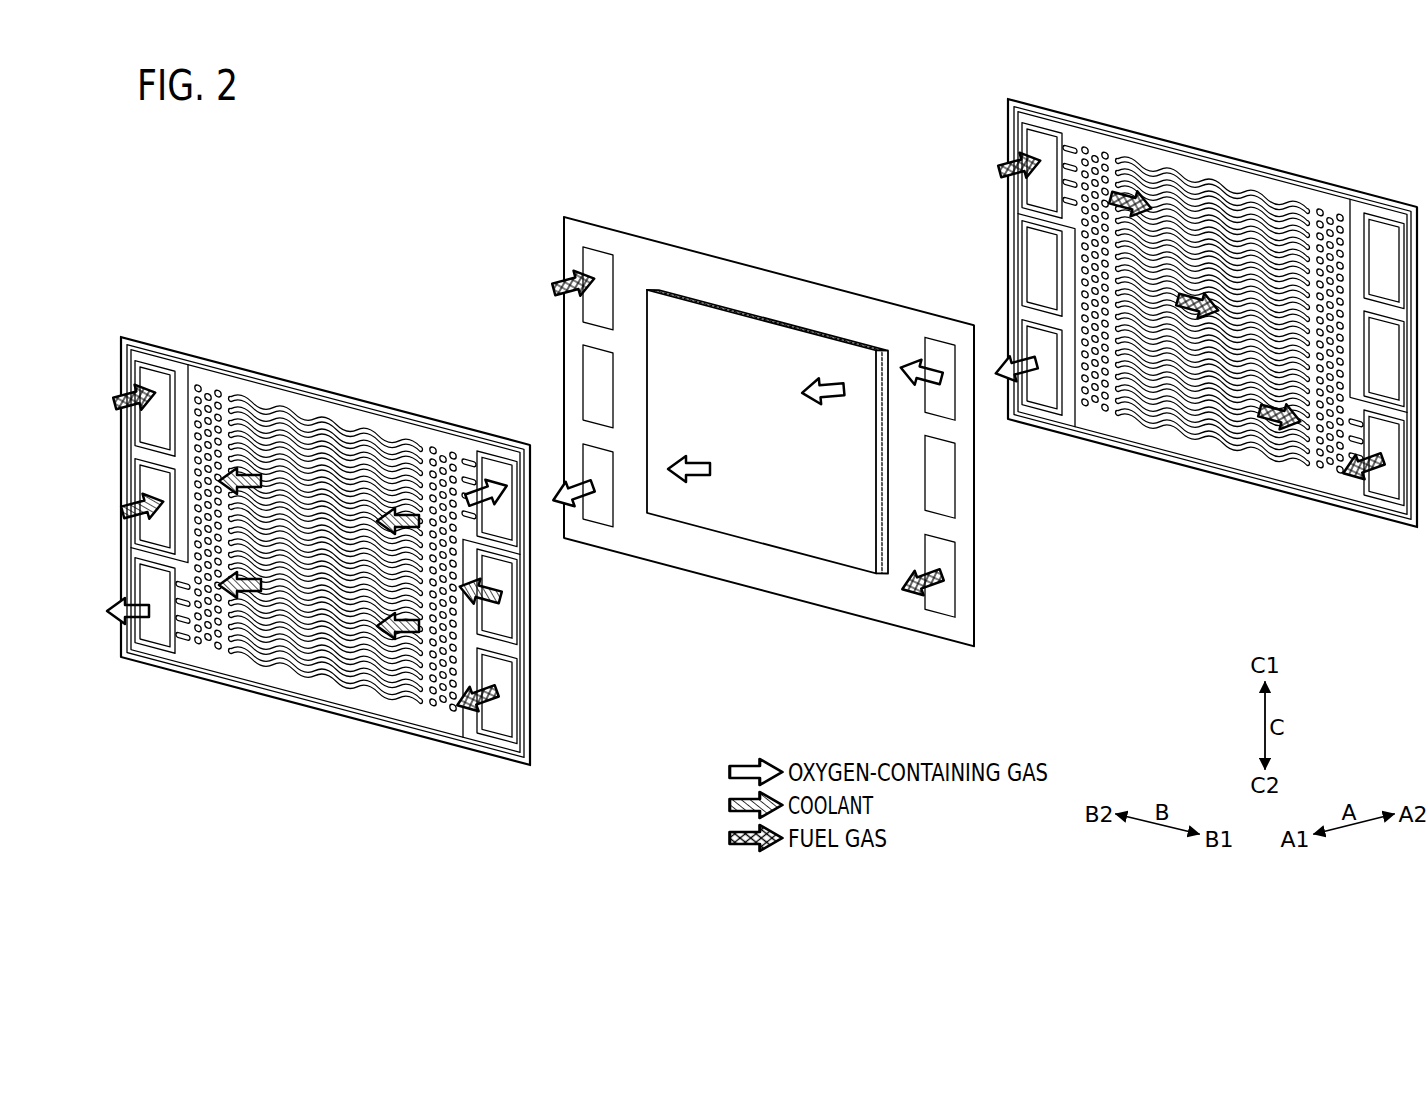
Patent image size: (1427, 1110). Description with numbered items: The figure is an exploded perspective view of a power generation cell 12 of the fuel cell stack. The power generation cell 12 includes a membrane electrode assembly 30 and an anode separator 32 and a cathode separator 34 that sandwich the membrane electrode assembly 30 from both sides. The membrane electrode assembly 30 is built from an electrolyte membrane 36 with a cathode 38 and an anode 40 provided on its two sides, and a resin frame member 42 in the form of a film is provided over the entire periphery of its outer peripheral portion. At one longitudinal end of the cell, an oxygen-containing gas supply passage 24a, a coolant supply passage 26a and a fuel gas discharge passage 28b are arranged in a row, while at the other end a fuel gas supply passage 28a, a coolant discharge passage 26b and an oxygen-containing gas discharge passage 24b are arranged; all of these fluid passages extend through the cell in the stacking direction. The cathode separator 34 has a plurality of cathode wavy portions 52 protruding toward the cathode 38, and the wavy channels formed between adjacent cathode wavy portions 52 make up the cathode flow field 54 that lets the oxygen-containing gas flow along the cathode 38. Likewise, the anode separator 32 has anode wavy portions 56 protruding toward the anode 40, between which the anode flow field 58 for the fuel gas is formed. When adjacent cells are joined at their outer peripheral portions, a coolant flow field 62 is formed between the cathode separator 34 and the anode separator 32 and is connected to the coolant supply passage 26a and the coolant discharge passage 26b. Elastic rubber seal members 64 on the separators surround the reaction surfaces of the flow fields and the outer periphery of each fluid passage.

The power generation cell 12 is at (420, 129).
The membrane electrode assembly 30 is at (642, 216).
The anode separator 32 is at (1087, 117).
The cathode separator 34 is at (217, 360).
The electrolyte membrane 36 is at (752, 312).
The cathode 38 is at (711, 320).
The anode 40 is at (816, 322).
The resin frame member 42 is at (870, 305).
The oxygen-containing gas supply passage 24a is at (495, 468).
The oxygen-containing gas discharge passage 24b is at (148, 627).
The coolant supply passage 26a is at (500, 618).
The coolant discharge passage 26b is at (157, 532).
The fuel gas supply passage 28a is at (156, 378).
The fuel gas discharge passage 28b is at (500, 715).
The cathode wavy portions 52 is at (347, 433).
The cathode flow field 54 is at (299, 426).
The anode wavy portions 56 is at (1212, 190).
The anode flow field 58 is at (1139, 417).
The coolant flow field 62 is at (325, 669).
The rubber seal member 64 is at (458, 740).